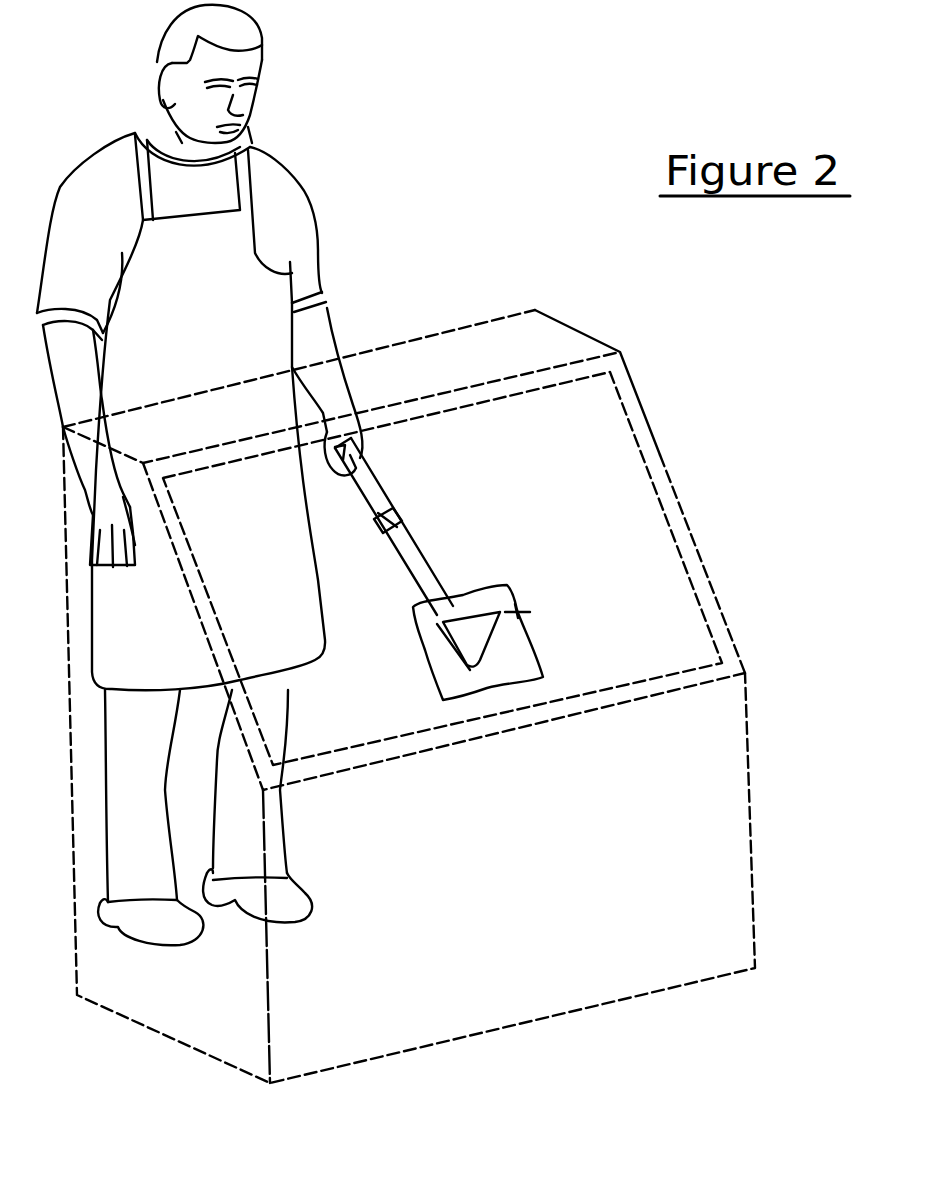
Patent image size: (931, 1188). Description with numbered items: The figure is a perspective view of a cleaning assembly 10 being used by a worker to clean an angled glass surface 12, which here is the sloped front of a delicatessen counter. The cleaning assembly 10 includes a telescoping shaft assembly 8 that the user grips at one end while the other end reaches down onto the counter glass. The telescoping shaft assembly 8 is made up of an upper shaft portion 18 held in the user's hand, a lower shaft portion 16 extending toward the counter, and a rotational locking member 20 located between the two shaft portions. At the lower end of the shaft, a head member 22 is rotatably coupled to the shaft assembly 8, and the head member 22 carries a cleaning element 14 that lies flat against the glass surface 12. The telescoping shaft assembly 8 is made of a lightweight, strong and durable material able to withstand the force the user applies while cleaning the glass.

The telescoping shaft assembly 8 is at (428, 458).
The cleaning assembly 10 is at (545, 563).
The glass surface 12 is at (633, 527).
The cleaning element 14 is at (512, 660).
The lower shaft portion 16 is at (428, 573).
The upper shaft portion 18 is at (371, 480).
The rotational locking member 20 is at (411, 531).
The head member 22 is at (520, 608).